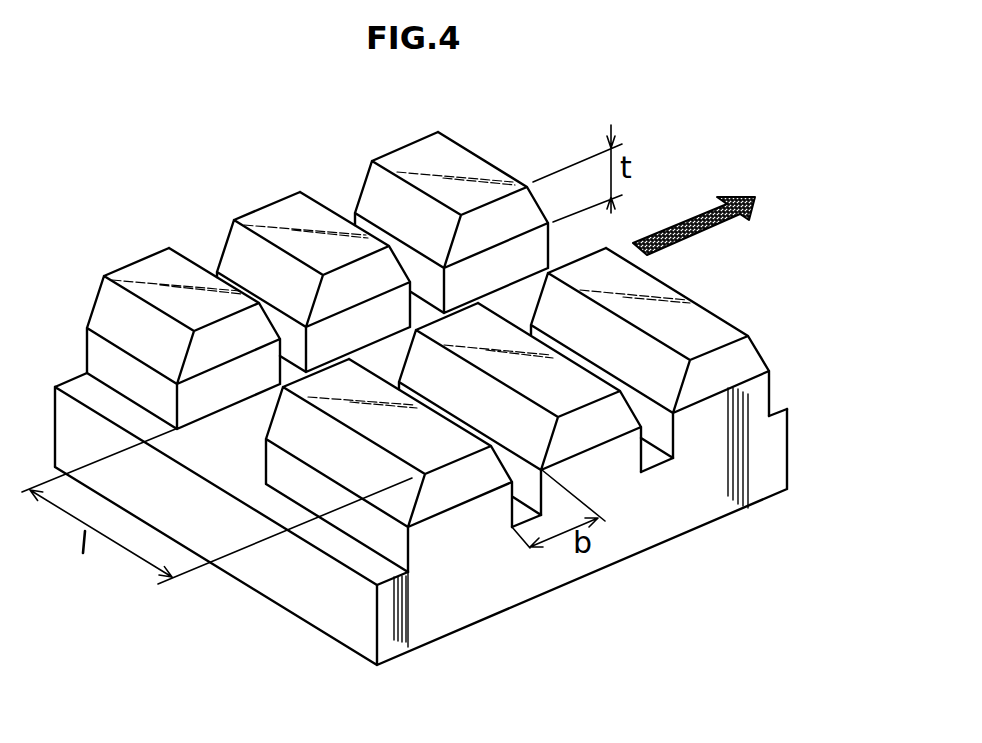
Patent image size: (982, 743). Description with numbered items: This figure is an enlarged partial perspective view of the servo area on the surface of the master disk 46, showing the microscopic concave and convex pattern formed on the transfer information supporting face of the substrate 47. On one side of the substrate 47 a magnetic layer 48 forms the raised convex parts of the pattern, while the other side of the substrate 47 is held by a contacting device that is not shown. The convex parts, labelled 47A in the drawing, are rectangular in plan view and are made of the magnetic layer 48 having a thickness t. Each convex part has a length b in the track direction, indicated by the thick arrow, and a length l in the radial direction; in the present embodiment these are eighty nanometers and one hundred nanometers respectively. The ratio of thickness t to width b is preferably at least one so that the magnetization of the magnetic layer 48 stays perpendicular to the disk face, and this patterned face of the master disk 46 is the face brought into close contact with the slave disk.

The master disk 46 is at (810, 373).
The substrate 47 is at (775, 459).
The projection block 47A is at (353, 210).
The magnetic layer 48 is at (732, 358).